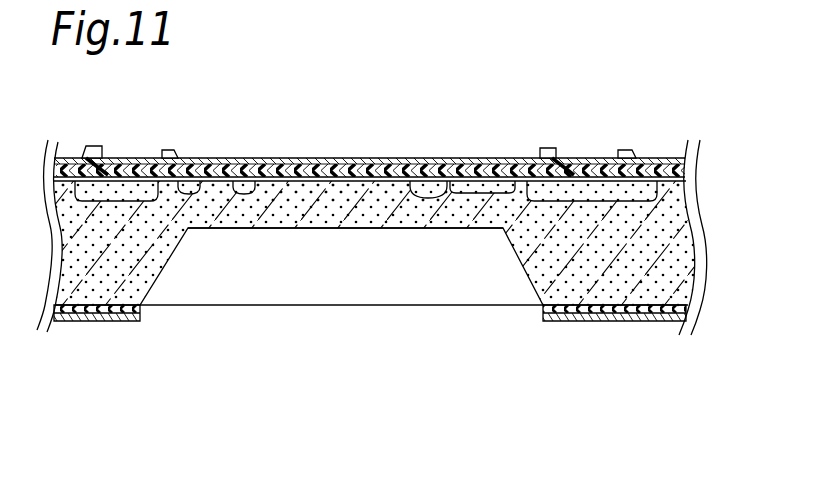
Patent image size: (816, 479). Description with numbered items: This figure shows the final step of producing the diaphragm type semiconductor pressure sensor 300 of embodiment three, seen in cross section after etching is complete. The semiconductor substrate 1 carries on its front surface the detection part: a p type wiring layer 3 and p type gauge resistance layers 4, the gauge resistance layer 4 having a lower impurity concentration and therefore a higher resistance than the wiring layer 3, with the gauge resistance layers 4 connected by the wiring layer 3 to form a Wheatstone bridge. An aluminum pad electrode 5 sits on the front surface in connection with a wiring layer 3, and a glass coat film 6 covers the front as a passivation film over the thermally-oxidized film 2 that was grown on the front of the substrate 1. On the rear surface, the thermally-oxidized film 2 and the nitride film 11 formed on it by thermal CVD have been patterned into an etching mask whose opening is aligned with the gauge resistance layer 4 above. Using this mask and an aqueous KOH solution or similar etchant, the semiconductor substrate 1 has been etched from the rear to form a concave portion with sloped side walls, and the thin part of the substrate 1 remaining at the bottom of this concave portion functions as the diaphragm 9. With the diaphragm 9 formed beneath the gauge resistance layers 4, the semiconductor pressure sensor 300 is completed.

The semiconductor substrate 1 is at (566, 238).
The thermally-oxidized film 2 is at (252, 166).
The wiring layer 3 is at (433, 190).
The gauge resistance layer 4 is at (484, 189).
The pad electrode 5 is at (124, 160).
The glass coat film 6 is at (294, 160).
The diaphragm 9 is at (275, 230).
The nitride film 11 is at (132, 321).
The semiconductor pressure sensor 300 is at (633, 373).